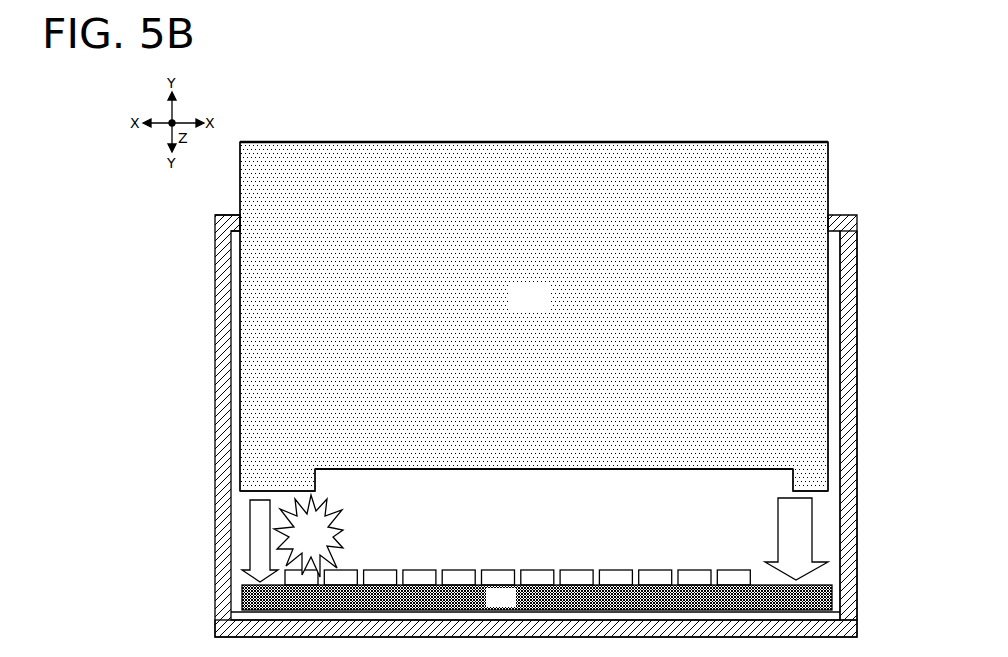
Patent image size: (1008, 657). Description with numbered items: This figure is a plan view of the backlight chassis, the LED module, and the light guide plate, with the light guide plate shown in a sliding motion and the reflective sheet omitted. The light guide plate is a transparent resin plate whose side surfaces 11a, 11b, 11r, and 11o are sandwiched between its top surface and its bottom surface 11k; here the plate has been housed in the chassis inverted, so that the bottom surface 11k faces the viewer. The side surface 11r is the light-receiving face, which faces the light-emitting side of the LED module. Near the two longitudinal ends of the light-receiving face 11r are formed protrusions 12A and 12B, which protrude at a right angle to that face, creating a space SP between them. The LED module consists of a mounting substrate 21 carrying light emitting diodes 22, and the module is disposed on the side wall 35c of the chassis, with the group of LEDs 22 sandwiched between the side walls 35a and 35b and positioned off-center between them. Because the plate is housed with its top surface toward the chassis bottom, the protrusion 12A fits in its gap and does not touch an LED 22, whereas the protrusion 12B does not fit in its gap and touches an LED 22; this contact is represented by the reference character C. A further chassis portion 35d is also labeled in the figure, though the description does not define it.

The bottom surface 11k is at (547, 307).
The side surface 11o is at (499, 128).
The side surface 11a is at (828, 162).
The side surface 11b is at (240, 158).
The side surface (light-receiving face) 11r is at (469, 470).
The protrusion 12A is at (774, 472).
The protrusion 12B is at (320, 488).
The side wall 35a is at (215, 254).
The side wall 35b is at (857, 254).
The side wall 35c is at (232, 640).
The upper flange of holder wall 35d is at (230, 215).
The mounting substrate 21 is at (537, 597).
The light emitting diodes 22 is at (703, 556).
The space SP is at (567, 474).
The contact C is at (308, 536).